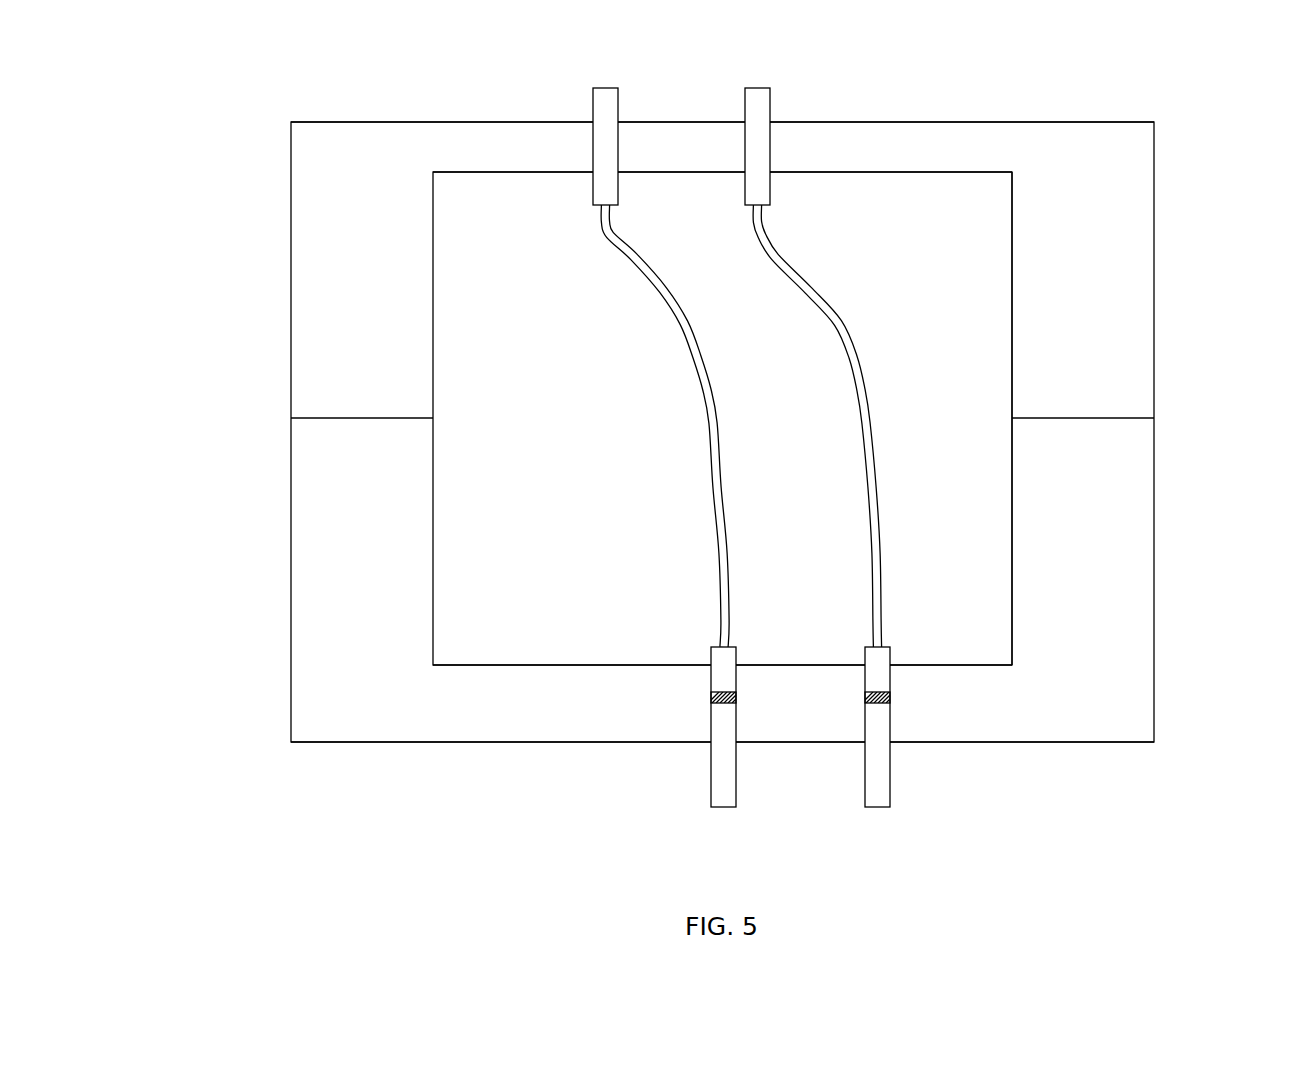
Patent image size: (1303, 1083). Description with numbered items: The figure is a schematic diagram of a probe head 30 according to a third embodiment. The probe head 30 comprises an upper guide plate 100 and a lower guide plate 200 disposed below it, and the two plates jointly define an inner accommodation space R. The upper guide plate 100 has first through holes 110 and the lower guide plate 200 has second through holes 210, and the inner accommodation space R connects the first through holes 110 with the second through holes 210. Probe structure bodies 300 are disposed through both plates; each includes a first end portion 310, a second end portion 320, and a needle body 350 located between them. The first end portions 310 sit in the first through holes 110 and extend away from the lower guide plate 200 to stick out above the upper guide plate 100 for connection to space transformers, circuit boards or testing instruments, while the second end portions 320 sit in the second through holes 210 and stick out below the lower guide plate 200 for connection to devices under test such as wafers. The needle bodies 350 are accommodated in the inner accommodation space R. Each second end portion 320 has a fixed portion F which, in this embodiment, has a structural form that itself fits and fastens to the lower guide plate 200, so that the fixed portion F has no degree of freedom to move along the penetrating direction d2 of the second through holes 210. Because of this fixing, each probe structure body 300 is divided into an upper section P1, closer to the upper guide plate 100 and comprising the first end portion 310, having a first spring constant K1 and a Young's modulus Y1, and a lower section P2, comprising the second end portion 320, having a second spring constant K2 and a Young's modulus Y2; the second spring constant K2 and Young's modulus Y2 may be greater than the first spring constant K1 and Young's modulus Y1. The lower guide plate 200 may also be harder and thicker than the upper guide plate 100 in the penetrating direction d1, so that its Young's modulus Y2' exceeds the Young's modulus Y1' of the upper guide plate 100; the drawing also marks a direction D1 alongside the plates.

The probe head 30 is at (258, 68).
The upper guide plate 100 is at (1112, 267).
The lower guide plate 200 is at (1112, 633).
The inner accommodation space R is at (548, 588).
The first through holes 110 is at (745, 121).
The second through holes 210 is at (890, 746).
The probe structure bodies 300 is at (1018, 112).
The first end portions 310 is at (762, 107).
The second end portions 320 is at (867, 758).
The needle bodies 350 is at (823, 290).
The Young's modulus of the upper section Y1 is at (591, 339).
The Young's modulus of the lower section Y2 is at (772, 823).
The Young's modulus of the upper guide plate Y1' is at (1198, 346).
The Young's modulus of the lower guide plate Y2' is at (1198, 526).
The upper section P1 is at (648, 278).
The lower section P2 is at (718, 760).
The first spring constant K1 is at (680, 318).
The second spring constant K2 is at (723, 807).
The fixed portion F is at (707, 697).
The first direction D1 is at (187, 388).
The penetrating direction d1 is at (605, 17).
The penetrating direction of the second through holes d2 is at (877, 822).